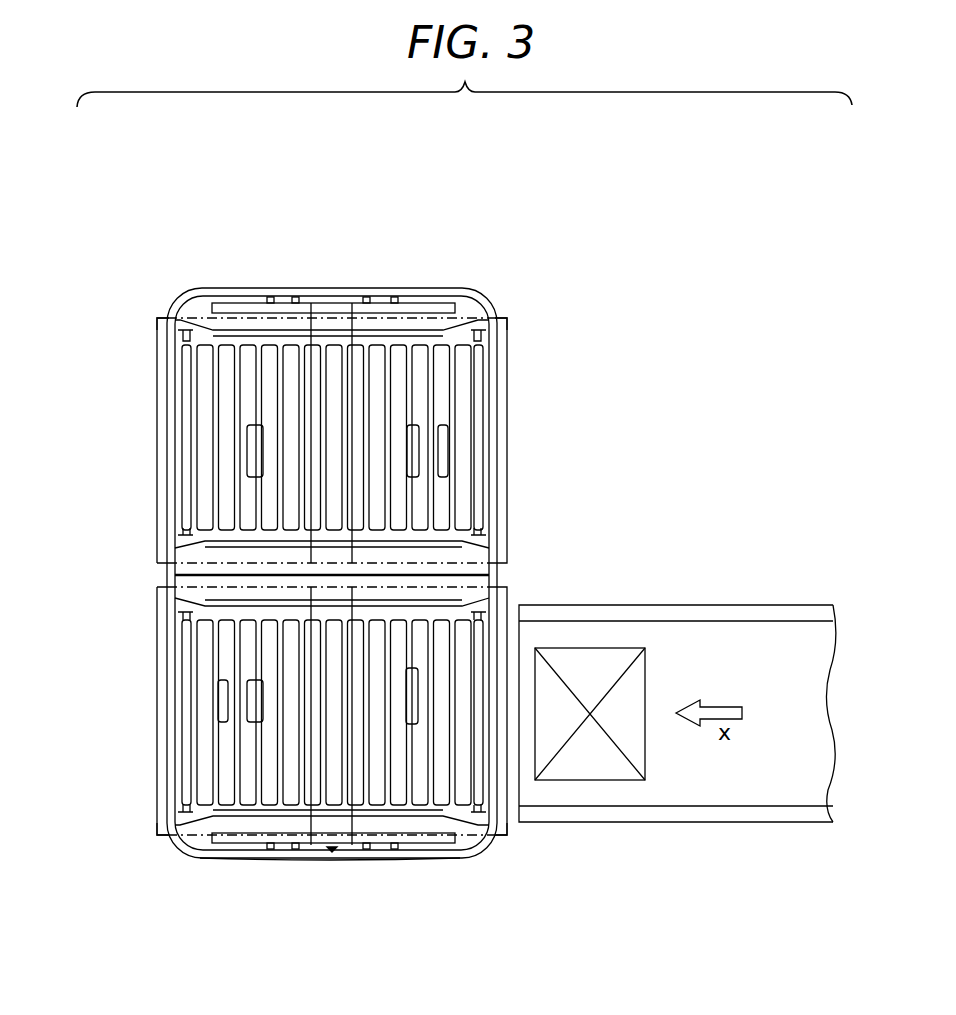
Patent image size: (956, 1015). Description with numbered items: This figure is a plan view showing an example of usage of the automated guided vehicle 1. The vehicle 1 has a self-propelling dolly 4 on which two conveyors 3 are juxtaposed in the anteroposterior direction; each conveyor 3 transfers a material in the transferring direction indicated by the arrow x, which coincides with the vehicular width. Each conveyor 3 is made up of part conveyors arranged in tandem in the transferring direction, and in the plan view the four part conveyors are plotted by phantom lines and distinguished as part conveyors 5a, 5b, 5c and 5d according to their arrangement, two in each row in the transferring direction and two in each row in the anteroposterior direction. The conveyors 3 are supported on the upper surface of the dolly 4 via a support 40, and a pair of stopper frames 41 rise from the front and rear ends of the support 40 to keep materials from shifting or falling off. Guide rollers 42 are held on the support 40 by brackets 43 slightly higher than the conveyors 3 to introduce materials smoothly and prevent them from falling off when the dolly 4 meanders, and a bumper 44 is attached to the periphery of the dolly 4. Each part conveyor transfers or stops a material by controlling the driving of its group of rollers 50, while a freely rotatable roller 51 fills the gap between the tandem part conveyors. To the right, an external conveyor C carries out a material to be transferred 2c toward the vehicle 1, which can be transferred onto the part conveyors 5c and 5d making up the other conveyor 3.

The automated guided vehicle 1 is at (368, 226).
The conveyor 3 is at (158, 424).
The dolly 4 is at (203, 288).
The part conveyor 5a is at (162, 852).
The part conveyor 5b is at (485, 847).
The part conveyor 5c is at (150, 306).
The part conveyor 5d is at (516, 304).
The support 40 is at (200, 838).
The stopper frame 41 is at (416, 300).
The guide roller 42 is at (183, 503).
The bracket 43 is at (180, 545).
The bumper 44 is at (275, 862).
The group of rollers 50 is at (417, 380).
The roller 51 is at (330, 350).
The conveyor C is at (686, 602).
The material to be transferred 2c is at (645, 660).